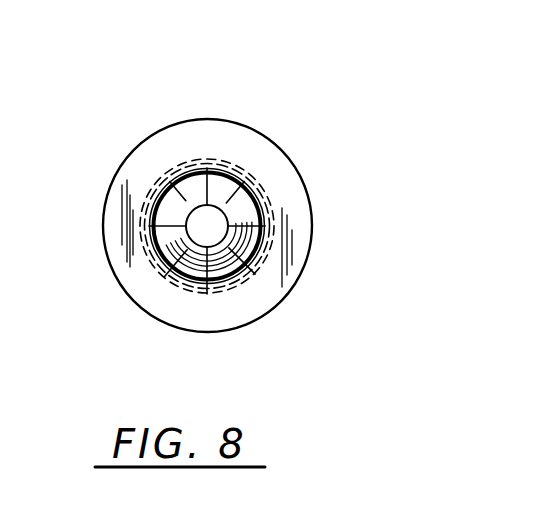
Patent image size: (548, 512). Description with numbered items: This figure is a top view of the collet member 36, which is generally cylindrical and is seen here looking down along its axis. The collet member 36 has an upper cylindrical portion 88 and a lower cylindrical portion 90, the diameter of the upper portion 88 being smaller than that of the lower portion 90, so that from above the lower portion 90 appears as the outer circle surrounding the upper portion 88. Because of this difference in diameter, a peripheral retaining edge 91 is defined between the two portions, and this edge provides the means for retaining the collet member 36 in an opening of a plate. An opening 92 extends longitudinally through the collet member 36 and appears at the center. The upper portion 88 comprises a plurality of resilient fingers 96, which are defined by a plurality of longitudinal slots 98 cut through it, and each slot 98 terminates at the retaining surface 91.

The collet member 36 is at (221, 92).
The lower cylindrical portion 90 is at (167, 127).
The peripheral retaining edge 91 is at (235, 133).
The upper cylindrical portion 88 is at (147, 223).
The longitudinal slots 98 is at (147, 202).
The opening 92 is at (219, 220).
The resilient fingers 96 is at (253, 246).